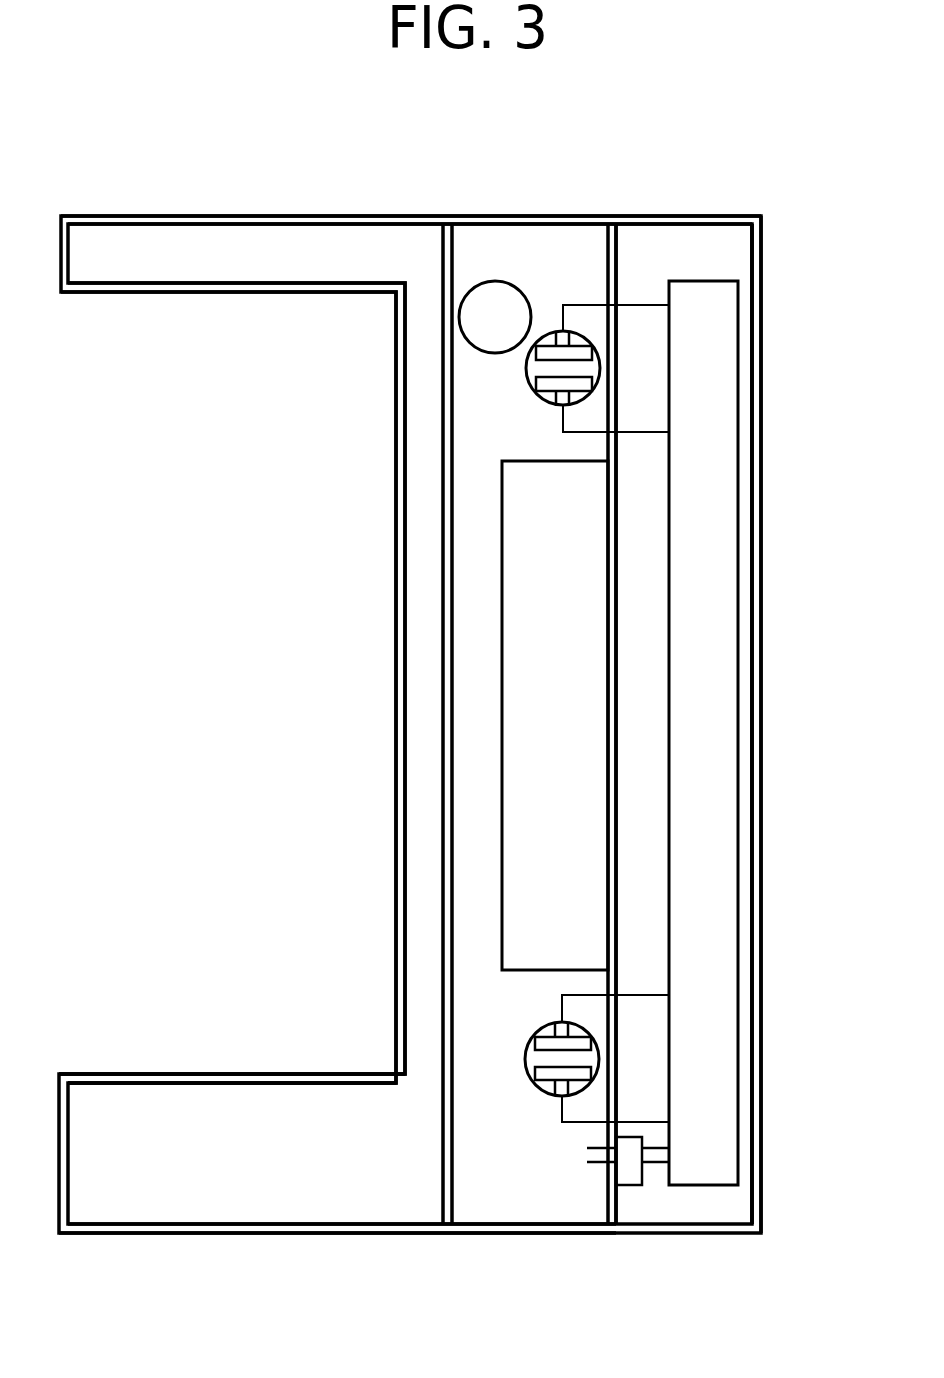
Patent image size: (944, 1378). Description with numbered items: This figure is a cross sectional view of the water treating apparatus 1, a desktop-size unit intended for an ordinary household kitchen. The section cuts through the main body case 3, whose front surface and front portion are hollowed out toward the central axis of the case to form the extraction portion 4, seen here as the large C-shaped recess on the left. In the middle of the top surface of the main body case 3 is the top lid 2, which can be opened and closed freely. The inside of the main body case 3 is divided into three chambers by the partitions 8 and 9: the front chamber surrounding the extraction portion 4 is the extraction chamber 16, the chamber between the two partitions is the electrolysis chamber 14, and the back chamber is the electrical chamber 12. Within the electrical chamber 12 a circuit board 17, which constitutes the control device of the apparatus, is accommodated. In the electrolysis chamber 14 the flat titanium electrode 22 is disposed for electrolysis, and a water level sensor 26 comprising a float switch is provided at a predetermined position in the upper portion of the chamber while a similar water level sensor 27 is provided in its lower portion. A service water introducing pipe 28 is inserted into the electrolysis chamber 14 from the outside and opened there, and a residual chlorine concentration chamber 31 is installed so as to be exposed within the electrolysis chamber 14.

The water treating apparatus 1 is at (752, 167).
The top lid 2 is at (565, 215).
The main body case 3 is at (762, 587).
The extraction portion 4 is at (193, 702).
The partition 8 is at (443, 676).
The partition 9 is at (618, 787).
The electrical chamber 12 is at (712, 254).
The electrolysis chamber 14 is at (502, 1205).
The extraction chamber 16 is at (284, 1205).
The circuit board 17 is at (738, 933).
The electrode 22 is at (500, 799).
The water level sensor 26 is at (549, 331).
The water level sensor 27 is at (536, 1040).
The service water introducing pipe 28 is at (490, 281).
The residual chlorine concentration chamber 31 is at (592, 1168).